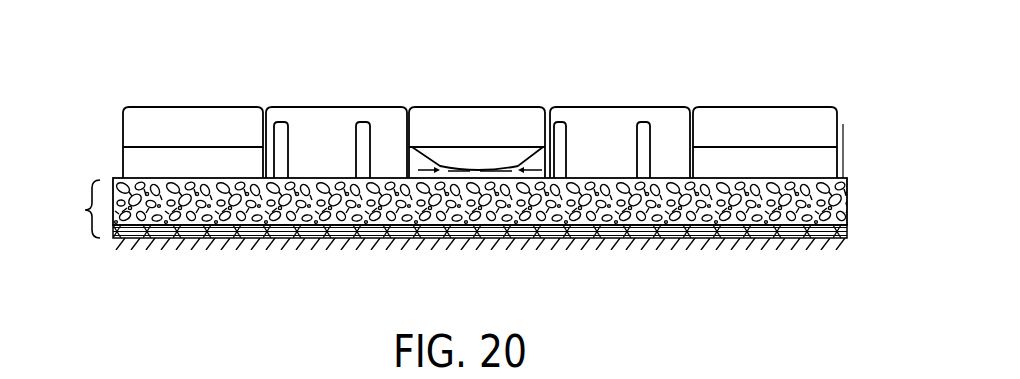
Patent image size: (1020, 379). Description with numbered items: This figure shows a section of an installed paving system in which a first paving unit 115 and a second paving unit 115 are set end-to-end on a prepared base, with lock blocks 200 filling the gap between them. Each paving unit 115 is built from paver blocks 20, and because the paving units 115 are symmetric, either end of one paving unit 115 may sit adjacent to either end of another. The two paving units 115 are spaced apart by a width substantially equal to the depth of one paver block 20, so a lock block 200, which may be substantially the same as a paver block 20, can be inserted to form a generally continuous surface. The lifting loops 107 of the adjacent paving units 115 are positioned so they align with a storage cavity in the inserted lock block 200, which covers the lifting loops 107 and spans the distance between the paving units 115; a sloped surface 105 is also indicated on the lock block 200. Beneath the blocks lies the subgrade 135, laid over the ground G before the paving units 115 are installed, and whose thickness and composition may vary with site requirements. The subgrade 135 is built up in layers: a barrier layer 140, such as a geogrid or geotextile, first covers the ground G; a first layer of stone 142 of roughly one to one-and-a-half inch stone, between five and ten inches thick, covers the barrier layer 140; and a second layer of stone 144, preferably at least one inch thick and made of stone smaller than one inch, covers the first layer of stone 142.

The paver block 20 is at (163, 98).
The paving unit 115 is at (210, 85).
The lifting loop 107 is at (416, 170).
The sloped drain surface 105 is at (433, 157).
The lock block 200 is at (478, 106).
The subgrade 135 is at (72, 209).
The barrier layer 140 is at (348, 242).
The first layer of stone 142 is at (430, 246).
The second layer of stone 144 is at (667, 228).
The ground G is at (848, 250).